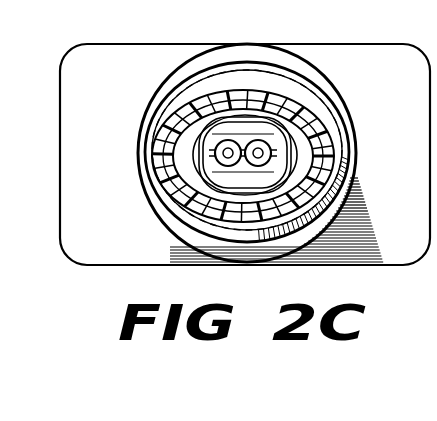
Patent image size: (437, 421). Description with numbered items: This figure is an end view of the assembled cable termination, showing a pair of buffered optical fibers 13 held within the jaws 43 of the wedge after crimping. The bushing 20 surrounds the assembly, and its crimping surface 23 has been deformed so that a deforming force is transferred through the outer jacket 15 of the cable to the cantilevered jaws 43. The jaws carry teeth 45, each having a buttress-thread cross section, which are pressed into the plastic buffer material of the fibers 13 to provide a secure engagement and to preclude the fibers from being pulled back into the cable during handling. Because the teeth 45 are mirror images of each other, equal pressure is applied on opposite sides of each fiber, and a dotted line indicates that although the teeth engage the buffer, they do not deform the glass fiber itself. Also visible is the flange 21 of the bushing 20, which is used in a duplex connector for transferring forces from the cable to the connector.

The bushing 20 is at (250, 131).
The flange 21 is at (407, 209).
The buffered optical fibers 13 is at (160, 210).
The jaws 43 is at (333, 148).
The teeth 45 is at (273, 110).
The crimping surface 23 is at (172, 108).
The outer jacket 15 is at (163, 153).